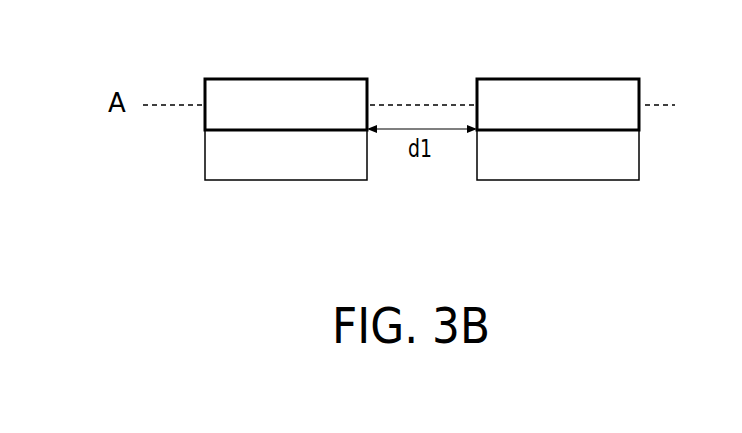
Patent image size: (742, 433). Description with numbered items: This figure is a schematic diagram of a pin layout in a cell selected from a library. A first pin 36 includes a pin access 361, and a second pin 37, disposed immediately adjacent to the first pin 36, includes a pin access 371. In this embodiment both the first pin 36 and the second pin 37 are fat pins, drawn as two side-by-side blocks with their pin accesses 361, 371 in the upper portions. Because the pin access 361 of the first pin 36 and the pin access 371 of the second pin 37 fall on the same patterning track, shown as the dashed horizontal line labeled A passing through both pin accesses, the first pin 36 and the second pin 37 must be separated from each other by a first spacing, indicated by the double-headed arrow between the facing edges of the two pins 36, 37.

The first pin 36 is at (313, 101).
The second pin 37 is at (585, 101).
The pin access 361 is at (265, 116).
The pin access 371 is at (538, 116).